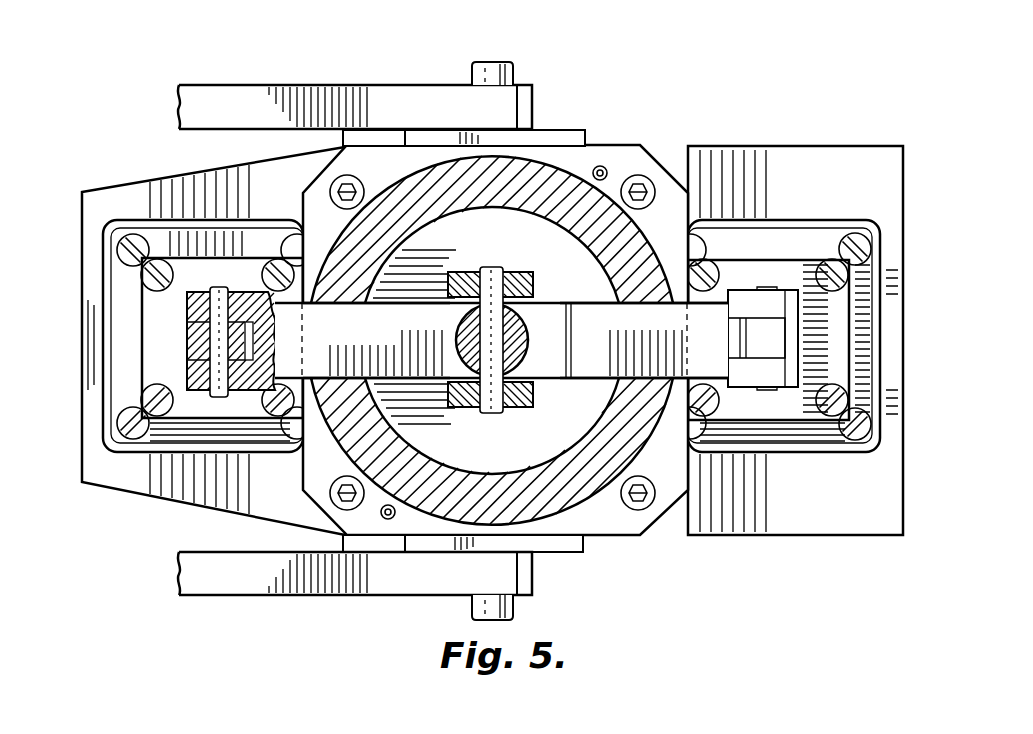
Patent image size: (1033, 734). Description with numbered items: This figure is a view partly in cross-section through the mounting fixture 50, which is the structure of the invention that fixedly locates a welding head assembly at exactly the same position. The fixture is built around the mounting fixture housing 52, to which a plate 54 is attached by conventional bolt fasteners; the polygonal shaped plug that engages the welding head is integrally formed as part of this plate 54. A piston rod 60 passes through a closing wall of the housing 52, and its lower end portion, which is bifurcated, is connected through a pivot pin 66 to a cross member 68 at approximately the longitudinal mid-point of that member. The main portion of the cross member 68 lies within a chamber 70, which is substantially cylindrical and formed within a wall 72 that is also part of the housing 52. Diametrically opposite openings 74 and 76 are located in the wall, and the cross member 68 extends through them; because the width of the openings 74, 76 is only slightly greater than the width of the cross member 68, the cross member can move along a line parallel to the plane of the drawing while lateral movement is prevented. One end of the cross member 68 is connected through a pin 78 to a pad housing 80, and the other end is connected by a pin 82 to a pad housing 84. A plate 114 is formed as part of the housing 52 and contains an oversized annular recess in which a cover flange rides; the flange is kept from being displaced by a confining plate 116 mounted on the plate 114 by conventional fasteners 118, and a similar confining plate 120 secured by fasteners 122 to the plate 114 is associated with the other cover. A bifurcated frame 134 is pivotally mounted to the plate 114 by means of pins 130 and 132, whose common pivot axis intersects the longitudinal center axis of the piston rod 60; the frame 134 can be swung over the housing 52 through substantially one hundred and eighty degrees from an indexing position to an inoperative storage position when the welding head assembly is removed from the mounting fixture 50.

The mounting fixture 50 is at (786, 112).
The mounting fixture housing 52 is at (628, 148).
The plate 54 is at (556, 137).
The piston rod 60 is at (533, 278).
The pivot pin 66 is at (497, 266).
The cross member 68 is at (540, 366).
The chamber 70 is at (522, 458).
The wall 72 is at (633, 425).
The opening 74 is at (345, 417).
The opening 76 is at (634, 366).
The pin 78 is at (213, 333).
The pad housing 80 is at (157, 312).
The pin 82 is at (770, 392).
The pad housing 84 is at (837, 337).
The plate 114 is at (868, 168).
The confining plate 116 is at (803, 238).
The fasteners 118 is at (882, 230).
The confining plate 120 is at (197, 258).
The fasteners 122 is at (118, 220).
The pin 130 is at (518, 64).
The pin 132 is at (480, 603).
The bifurcated frame 134 is at (510, 108).